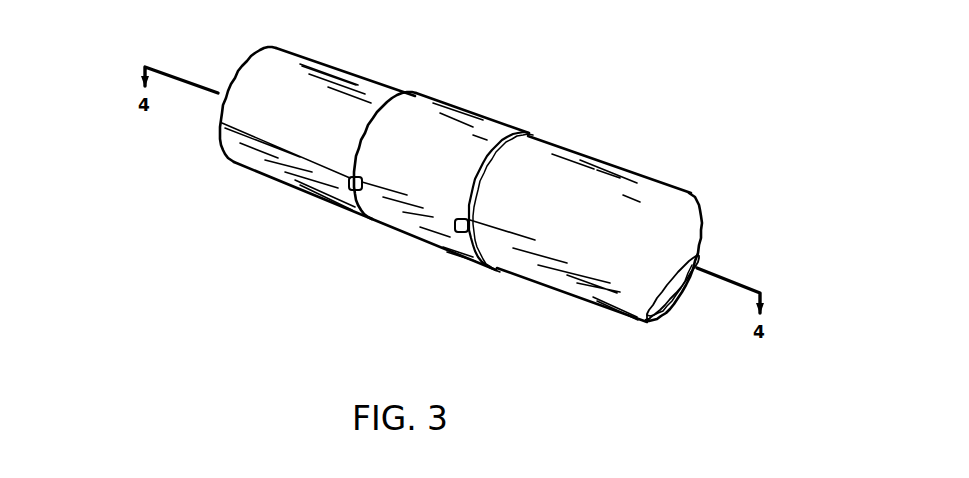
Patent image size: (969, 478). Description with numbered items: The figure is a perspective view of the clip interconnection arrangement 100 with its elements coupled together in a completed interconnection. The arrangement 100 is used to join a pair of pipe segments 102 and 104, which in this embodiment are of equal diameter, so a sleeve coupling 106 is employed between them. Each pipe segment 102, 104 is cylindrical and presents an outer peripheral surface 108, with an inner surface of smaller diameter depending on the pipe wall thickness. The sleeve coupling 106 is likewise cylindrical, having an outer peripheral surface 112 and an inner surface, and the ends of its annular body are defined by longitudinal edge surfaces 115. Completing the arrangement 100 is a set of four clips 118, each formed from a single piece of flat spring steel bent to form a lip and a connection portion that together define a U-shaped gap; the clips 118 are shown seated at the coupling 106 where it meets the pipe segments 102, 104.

The clip interconnection arrangement 100 is at (681, 67).
The pipe segment 102 is at (257, 186).
The pipe segment 104 is at (662, 169).
The sleeve coupling 106 is at (494, 156).
The outer peripheral surface 108 is at (306, 117).
The outer peripheral surface 112 is at (428, 157).
The longitudinal edge surfaces 115 is at (545, 134).
The clip 118 is at (363, 199).